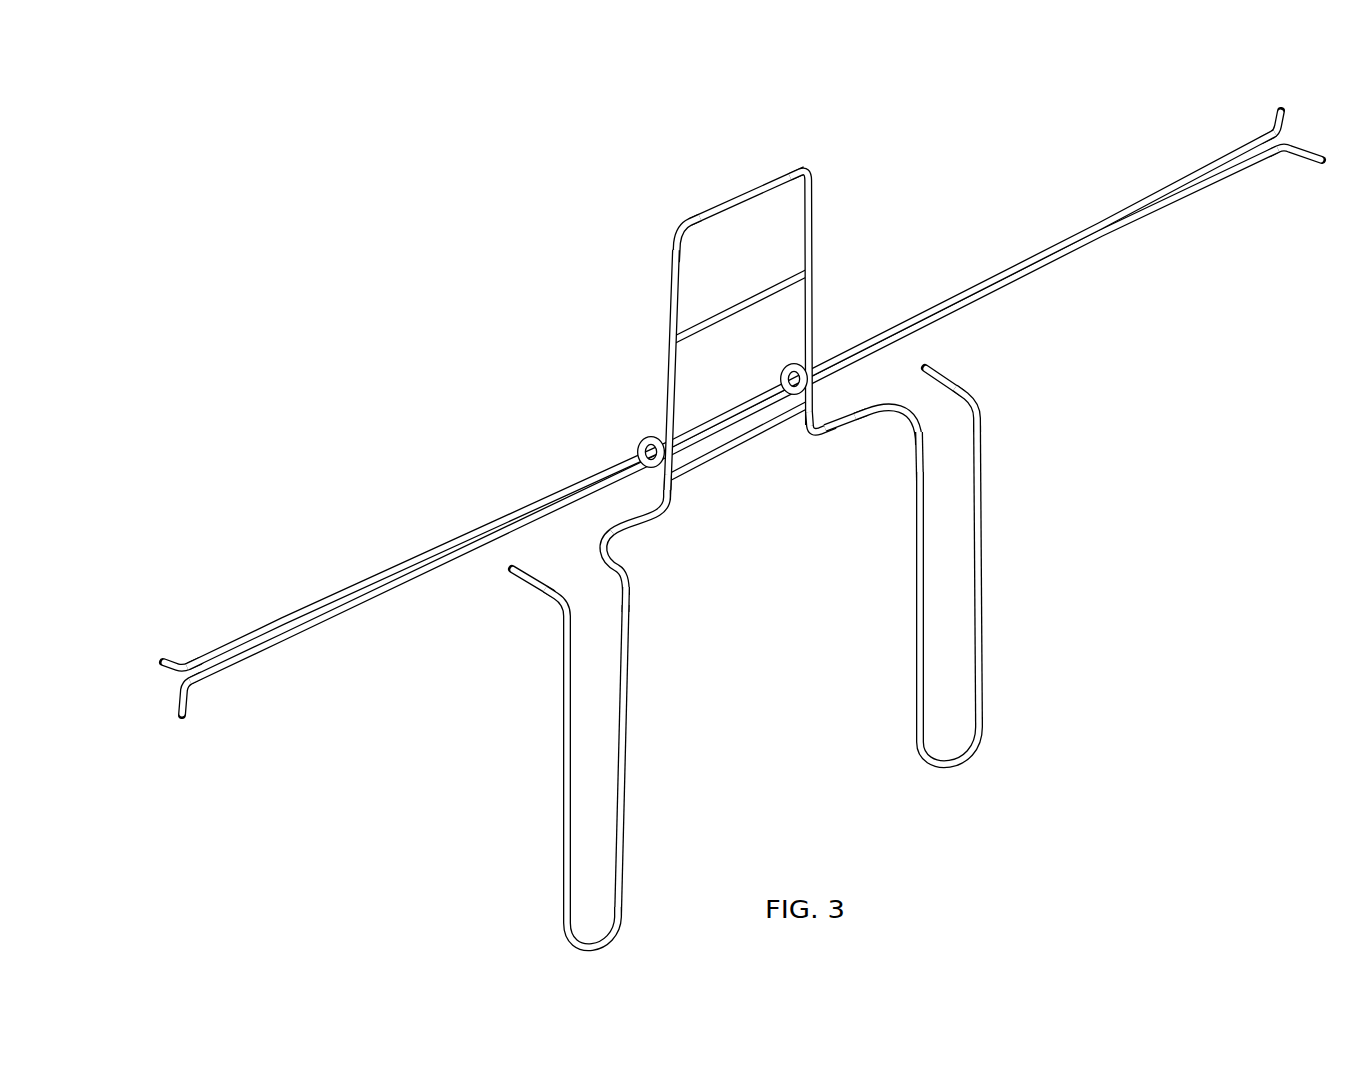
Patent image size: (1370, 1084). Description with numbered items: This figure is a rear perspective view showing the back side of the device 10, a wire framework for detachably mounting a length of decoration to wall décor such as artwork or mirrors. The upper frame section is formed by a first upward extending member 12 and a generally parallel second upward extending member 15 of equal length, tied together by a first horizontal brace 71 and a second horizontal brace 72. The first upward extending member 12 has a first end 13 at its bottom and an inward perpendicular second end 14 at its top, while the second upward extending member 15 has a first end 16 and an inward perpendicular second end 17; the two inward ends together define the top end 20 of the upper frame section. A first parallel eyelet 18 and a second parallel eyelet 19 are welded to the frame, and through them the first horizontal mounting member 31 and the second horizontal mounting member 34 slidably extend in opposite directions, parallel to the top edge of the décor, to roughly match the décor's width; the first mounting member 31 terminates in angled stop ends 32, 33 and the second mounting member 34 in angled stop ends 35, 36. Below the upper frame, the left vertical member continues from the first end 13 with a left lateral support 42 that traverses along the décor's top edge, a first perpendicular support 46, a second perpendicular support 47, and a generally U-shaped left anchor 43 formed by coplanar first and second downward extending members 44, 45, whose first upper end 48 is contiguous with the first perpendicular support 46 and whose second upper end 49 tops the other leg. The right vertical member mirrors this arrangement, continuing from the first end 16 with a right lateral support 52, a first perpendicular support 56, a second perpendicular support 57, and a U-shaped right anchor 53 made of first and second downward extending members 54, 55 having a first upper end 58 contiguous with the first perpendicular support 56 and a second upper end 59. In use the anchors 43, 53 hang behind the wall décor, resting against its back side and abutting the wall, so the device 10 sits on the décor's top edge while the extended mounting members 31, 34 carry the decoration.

The device 10 is at (362, 344).
The first upward extending member 12 is at (741, 314).
The first end 13 is at (812, 436).
The inward perpendicular second end 14 is at (803, 181).
The second upward extending member 15 is at (667, 343).
The first end 16 is at (660, 513).
The inward perpendicular second end 17 is at (677, 226).
The first parallel eyelet 18 is at (796, 348).
The second parallel eyelet 19 is at (637, 438).
The top end 20 is at (737, 187).
The first horizontal mounting member 31 is at (764, 432).
The angled stop end 32 is at (1300, 164).
The angled stop end 33 is at (189, 700).
The second horizontal mounting member 34 is at (722, 355).
The angled stop end 35 is at (1273, 108).
The angled stop end 36 is at (175, 657).
The left lateral support 42 is at (845, 430).
The left anchor 43 is at (973, 543).
The first downward extending member 44 is at (913, 600).
The second downward extending member 45 is at (985, 580).
The first perpendicular support 46 is at (907, 418).
The second perpendicular support 47 is at (948, 383).
The first upper end 48 is at (873, 422).
The second upper end 49 is at (983, 413).
The right lateral support 52 is at (632, 534).
The right anchor 53 is at (598, 718).
The first downward extending member 54 is at (628, 775).
The second downward extending member 55 is at (560, 717).
The first perpendicular support 56 is at (620, 551).
The second perpendicular support 57 is at (523, 583).
The first upper end 58 is at (636, 573).
The second upper end 59 is at (562, 620).
The first horizontal brace 71 is at (712, 463).
The second horizontal brace 72 is at (717, 313).